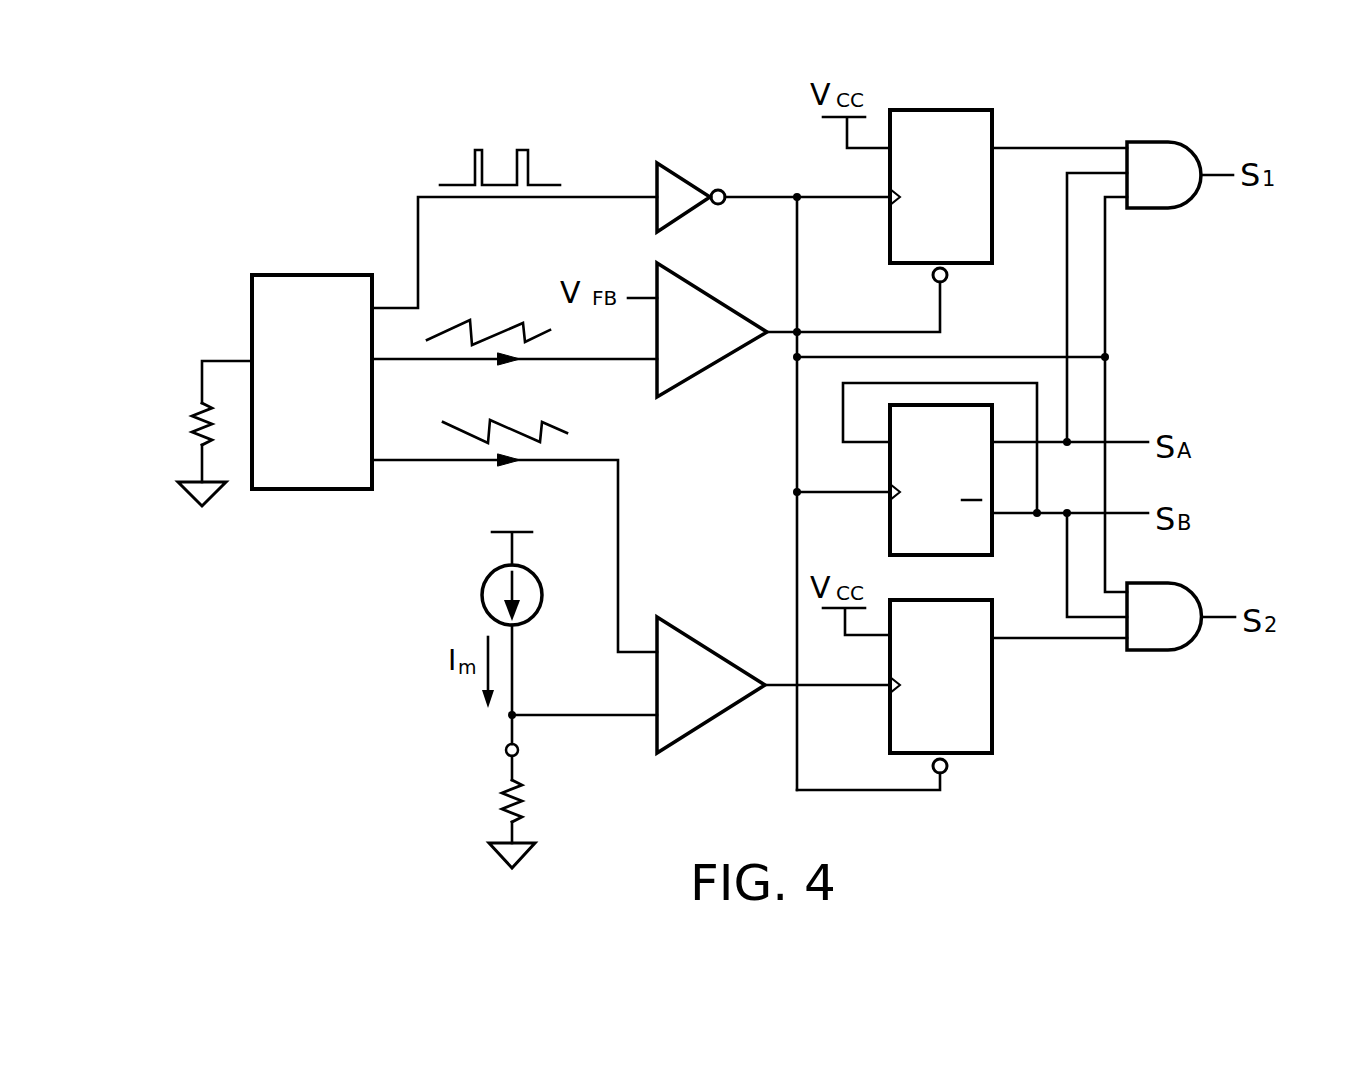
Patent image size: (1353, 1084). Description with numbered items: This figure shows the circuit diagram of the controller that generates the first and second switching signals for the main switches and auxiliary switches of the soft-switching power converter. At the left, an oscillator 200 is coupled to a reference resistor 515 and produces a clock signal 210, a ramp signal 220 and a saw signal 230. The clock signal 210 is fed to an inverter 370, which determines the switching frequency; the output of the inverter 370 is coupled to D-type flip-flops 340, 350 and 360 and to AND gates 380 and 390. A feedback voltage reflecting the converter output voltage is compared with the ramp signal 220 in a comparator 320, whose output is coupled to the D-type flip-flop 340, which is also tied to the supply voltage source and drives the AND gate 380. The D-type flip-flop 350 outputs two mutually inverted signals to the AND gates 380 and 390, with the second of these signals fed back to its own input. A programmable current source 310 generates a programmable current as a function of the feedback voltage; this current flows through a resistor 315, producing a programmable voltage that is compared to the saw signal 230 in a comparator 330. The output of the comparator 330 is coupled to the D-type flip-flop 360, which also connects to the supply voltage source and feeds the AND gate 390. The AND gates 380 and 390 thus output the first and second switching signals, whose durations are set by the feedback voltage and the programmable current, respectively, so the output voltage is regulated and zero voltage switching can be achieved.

The oscillator 200 is at (302, 268).
The clock signal 210 is at (533, 160).
The ramp signal 220 is at (488, 322).
The saw signal 230 is at (480, 433).
The programmable current source 310 is at (482, 605).
The resistor 315 is at (495, 812).
The comparator 320 is at (712, 373).
The comparator 330 is at (710, 640).
The D-type flip-flop 340 is at (980, 272).
The D-type flip-flop 350 is at (992, 562).
The D-type flip-flop 360 is at (1002, 732).
The inverter 370 is at (685, 173).
The AND gate 380 is at (1158, 215).
The AND gate 390 is at (1160, 657).
The reference resistor 515 is at (185, 420).